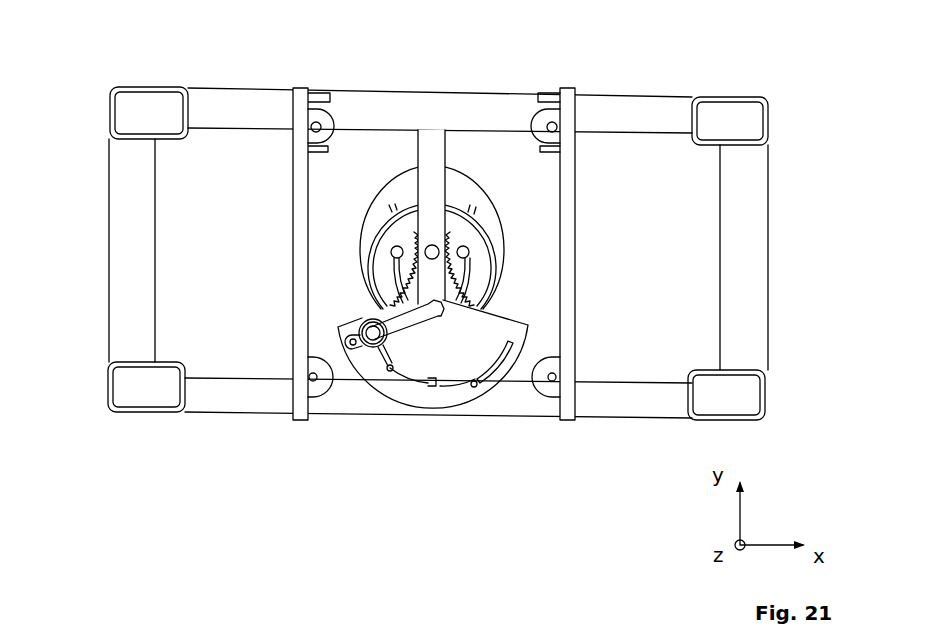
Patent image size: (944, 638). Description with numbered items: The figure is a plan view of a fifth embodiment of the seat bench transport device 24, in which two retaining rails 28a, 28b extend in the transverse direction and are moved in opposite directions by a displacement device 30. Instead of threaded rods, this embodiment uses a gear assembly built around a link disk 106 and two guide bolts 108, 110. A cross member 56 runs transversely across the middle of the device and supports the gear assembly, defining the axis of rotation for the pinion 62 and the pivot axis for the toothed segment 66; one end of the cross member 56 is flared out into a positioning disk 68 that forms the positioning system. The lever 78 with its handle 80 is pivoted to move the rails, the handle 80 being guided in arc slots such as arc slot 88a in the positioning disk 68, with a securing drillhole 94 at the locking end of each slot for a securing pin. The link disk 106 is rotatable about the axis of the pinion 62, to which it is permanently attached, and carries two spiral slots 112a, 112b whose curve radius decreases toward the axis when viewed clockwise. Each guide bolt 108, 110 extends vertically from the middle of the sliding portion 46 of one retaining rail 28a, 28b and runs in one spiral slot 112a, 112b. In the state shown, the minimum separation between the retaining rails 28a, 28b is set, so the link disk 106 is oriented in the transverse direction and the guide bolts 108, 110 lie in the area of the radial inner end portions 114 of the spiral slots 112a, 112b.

The seat bench transport device 24 is at (55, 26).
The retaining rail 28a is at (304, 84).
The retaining rail 28b is at (570, 84).
The displacement device 30 is at (469, 158).
The sliding portion 46 is at (345, 180).
The cross member 56 is at (431, 150).
The pinion 62 is at (465, 242).
The toothed segment 66 is at (476, 294).
The positioning disk 68 is at (505, 332).
The lever 78 is at (408, 322).
The handle 80 is at (373, 333).
The arc slot 88a is at (385, 363).
The securing drillhole 94 is at (390, 371).
The link disk 106 is at (468, 215).
The guide bolt 108 is at (391, 251).
The guide bolt 110 is at (469, 252).
The spiral slot 112a is at (383, 278).
The spiral slot 112b is at (474, 290).
The radial inner end portion 114 is at (465, 300).